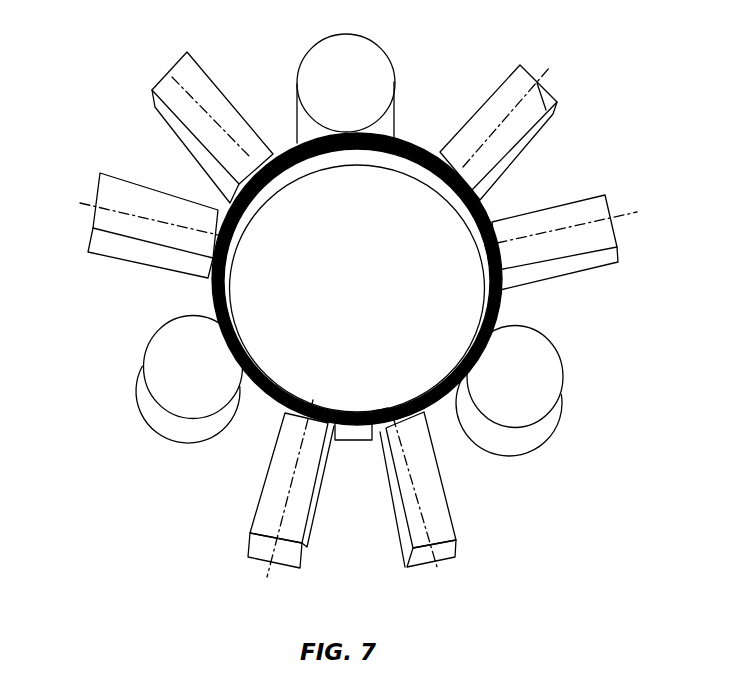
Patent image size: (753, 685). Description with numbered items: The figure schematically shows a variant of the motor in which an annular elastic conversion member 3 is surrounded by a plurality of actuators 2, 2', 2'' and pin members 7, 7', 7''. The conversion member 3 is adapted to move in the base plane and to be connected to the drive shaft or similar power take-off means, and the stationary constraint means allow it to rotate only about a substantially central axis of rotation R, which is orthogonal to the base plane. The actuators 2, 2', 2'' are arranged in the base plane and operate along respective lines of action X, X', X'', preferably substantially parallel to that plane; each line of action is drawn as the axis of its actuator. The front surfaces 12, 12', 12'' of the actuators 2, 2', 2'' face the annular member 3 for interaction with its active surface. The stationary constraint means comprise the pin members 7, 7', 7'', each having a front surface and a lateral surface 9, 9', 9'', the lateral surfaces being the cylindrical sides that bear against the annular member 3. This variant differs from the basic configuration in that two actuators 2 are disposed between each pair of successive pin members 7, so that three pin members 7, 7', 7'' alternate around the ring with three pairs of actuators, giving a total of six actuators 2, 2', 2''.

The axis of rotation R is at (358, 281).
The actuator 2 is at (529, 183).
The actuator 2' is at (164, 161).
The actuator 2'' is at (386, 504).
The elastic conversion member 3 is at (350, 445).
The pin member 7 is at (355, 72).
The pin member 7' is at (540, 377).
The pin member 7'' is at (167, 367).
The lateral surface 9 is at (328, 94).
The lateral surface 9' is at (509, 440).
The lateral surface 9'' is at (188, 436).
The front surface 12 is at (424, 236).
The front surface 12' is at (280, 231).
The front surface 12'' is at (364, 377).
The line of action X is at (566, 157).
The line of action X' is at (146, 139).
The line of action X'' is at (354, 507).